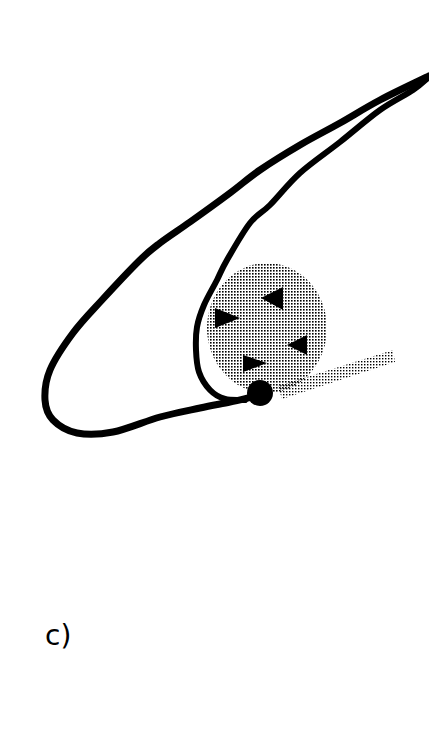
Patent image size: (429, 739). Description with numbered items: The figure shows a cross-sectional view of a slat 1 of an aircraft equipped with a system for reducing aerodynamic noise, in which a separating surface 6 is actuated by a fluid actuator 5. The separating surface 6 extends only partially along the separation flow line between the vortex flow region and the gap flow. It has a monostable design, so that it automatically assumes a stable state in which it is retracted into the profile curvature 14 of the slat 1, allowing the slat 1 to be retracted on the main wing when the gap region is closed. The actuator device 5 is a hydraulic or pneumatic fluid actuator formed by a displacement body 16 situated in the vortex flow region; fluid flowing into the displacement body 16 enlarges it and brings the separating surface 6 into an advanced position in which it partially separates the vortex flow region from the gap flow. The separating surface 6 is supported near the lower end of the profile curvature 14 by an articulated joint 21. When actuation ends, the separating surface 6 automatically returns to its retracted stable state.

The slat 1 is at (127, 260).
The profile curvature 14 is at (293, 187).
The fluid actuator 5 is at (303, 300).
The displacement body 16 is at (303, 273).
The separating surface 6 is at (358, 368).
The articulated joint 21 is at (268, 398).